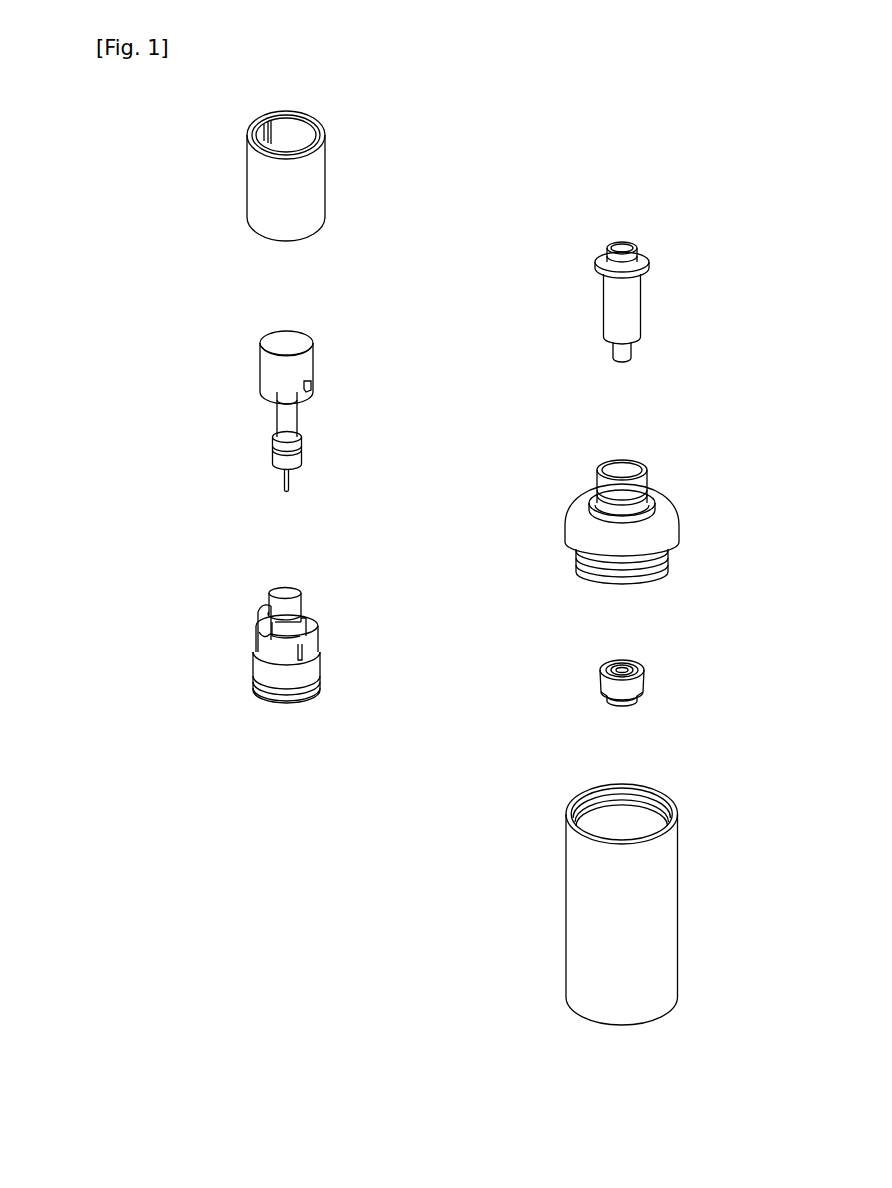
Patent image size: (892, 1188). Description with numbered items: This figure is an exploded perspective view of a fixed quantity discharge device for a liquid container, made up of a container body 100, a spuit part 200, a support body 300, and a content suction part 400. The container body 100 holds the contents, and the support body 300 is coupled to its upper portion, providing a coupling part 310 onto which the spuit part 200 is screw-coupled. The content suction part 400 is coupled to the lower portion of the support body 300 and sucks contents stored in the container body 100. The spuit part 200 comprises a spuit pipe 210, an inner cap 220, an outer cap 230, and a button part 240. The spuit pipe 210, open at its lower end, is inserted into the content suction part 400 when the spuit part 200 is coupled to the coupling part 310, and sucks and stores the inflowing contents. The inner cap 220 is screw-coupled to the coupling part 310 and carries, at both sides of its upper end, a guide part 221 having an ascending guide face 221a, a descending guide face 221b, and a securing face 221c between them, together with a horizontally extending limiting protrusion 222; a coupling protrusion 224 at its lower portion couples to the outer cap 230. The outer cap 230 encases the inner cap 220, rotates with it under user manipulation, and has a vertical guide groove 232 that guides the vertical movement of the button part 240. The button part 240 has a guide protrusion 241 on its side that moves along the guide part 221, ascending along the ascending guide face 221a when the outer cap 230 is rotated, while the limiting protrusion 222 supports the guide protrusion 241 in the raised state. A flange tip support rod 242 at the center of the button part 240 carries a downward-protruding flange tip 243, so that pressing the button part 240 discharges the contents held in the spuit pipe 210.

The container body 100 is at (670, 912).
The spuit part 200 is at (668, 314).
The spuit pipe 210 is at (628, 300).
The inner cap 220 is at (254, 665).
The guide part 221 is at (211, 638).
The ascending guide face 221a is at (257, 625).
The descending guide face 221b is at (262, 637).
The securing face 221c is at (258, 652).
The limiting protrusion 222 is at (266, 608).
The coupling protrusion 224 is at (325, 685).
The outer cap 230 is at (307, 195).
The vertical guide groove 232 is at (272, 132).
The button part 240 is at (268, 372).
The guide protrusion 241 is at (312, 388).
The flange tip support rod 242 is at (283, 414).
The flange tip 243 is at (275, 452).
The support body 300 is at (672, 516).
The coupling part 310 is at (650, 470).
The content suction part 400 is at (599, 704).